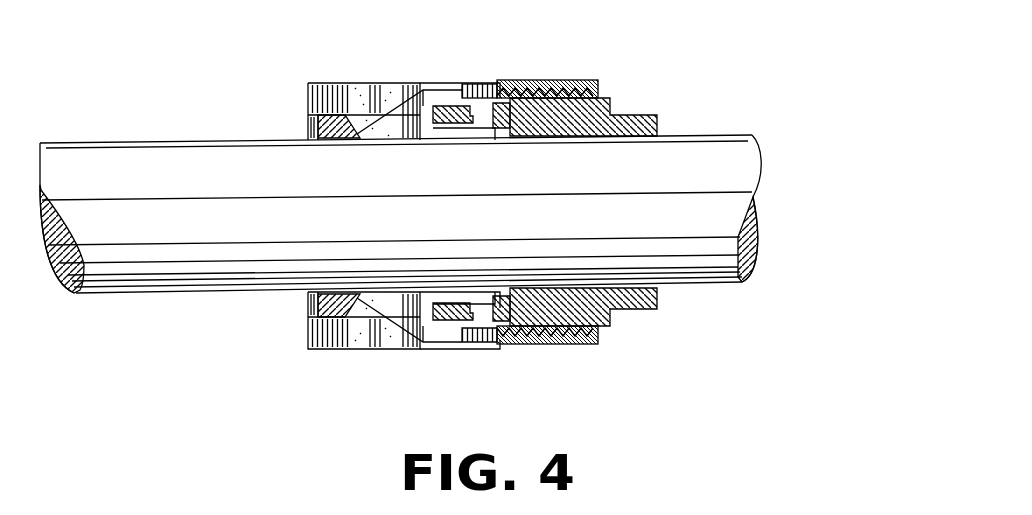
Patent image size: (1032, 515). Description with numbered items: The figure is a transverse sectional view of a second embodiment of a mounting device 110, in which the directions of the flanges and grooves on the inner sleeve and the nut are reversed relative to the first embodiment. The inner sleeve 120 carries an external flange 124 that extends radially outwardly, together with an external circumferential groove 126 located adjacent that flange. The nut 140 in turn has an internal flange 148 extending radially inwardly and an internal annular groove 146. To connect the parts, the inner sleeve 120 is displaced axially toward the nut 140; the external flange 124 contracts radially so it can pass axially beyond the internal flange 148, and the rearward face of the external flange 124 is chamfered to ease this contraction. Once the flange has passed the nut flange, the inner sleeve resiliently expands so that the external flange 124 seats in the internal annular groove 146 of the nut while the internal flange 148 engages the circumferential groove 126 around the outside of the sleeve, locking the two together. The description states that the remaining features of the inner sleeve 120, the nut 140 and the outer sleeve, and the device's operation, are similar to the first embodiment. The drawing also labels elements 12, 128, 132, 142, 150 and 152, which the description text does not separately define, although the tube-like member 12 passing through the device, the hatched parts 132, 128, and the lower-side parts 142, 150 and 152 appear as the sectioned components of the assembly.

The pipe 12 is at (212, 158).
The mounting device 110 is at (389, 68).
The inner sleeve 120 is at (393, 122).
The external flange 124 is at (500, 136).
The external circumferential groove 126 is at (458, 128).
The ferrule 128 is at (500, 300).
The wedge ring 132 is at (335, 140).
The nut 140 is at (601, 97).
The nut 142 is at (612, 312).
The internal annular groove 146 is at (506, 80).
The internal flange 148 is at (468, 86).
The body nut 150 is at (338, 349).
The threads 152 is at (560, 346).